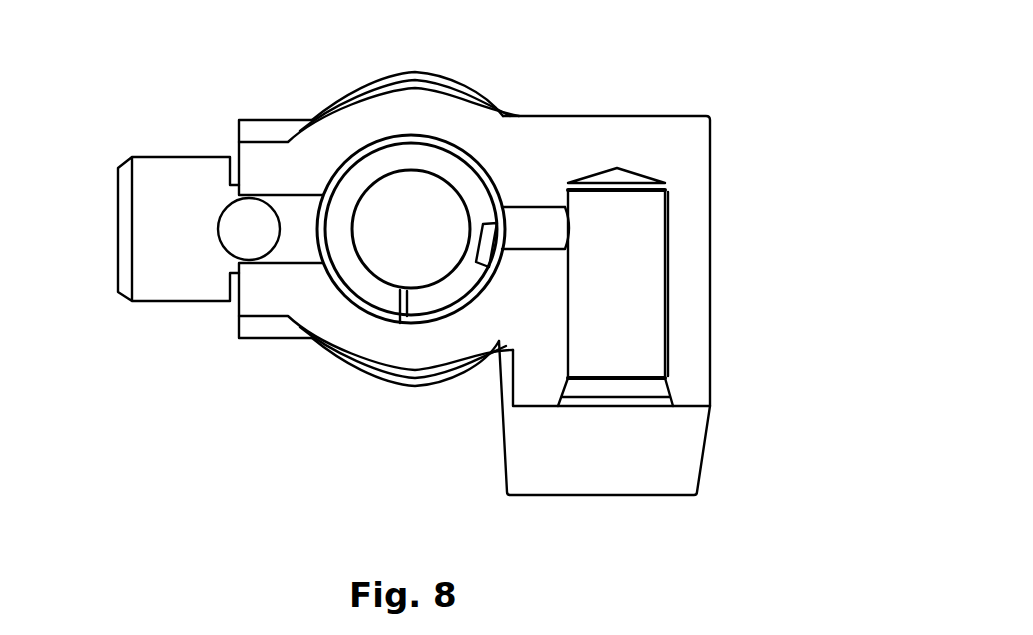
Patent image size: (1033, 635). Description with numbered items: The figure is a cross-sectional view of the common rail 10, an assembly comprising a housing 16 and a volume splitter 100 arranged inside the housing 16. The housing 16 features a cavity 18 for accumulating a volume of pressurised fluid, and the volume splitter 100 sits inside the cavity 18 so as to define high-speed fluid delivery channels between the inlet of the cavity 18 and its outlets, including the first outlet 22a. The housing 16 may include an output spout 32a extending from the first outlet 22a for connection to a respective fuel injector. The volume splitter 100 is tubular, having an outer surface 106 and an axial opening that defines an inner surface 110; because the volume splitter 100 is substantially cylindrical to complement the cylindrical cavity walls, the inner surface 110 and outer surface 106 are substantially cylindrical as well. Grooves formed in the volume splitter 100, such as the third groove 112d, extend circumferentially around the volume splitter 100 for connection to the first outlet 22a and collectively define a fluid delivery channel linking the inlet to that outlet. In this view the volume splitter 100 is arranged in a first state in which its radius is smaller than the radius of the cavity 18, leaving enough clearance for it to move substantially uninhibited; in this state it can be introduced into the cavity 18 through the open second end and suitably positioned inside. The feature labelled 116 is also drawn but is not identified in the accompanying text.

The common rail 10 is at (152, 120).
The housing 16 is at (270, 178).
The cavity 18 is at (352, 148).
The first outlet 22a is at (512, 218).
The output spout 32a is at (632, 272).
The volume splitter 100 is at (428, 298).
The outer surface 106 is at (333, 280).
The inner surface 110 is at (420, 173).
The third groove 112d is at (494, 262).
The slot 116 is at (403, 295).